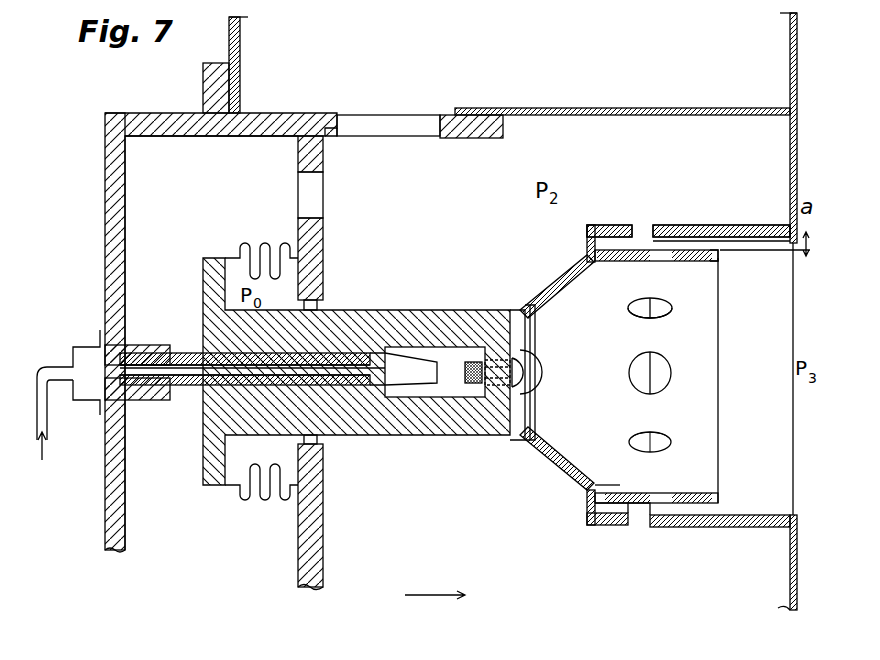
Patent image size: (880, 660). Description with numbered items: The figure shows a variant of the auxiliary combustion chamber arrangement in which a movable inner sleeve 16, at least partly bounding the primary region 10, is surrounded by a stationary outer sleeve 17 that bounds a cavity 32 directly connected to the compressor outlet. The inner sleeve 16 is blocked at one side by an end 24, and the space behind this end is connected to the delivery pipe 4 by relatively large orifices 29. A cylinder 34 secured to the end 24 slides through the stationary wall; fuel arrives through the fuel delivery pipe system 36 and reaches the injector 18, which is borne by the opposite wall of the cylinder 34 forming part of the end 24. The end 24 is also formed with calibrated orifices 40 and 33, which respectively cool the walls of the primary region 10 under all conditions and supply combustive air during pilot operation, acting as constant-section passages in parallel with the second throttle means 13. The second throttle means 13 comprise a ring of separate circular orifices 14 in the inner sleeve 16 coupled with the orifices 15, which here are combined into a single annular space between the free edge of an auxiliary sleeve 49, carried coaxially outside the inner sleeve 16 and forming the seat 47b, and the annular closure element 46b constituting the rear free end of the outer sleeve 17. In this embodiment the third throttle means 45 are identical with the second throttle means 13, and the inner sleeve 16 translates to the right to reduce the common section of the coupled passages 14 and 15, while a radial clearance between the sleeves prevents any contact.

The delivery pipe 4 is at (486, 84).
The orifices 29 is at (388, 125).
The cavity 32 is at (456, 208).
The cylinder 34 is at (405, 315).
The fuel delivery pipe system 36 is at (47, 372).
The injector 18 is at (535, 366).
The calibrated orifice 33 is at (517, 310).
The calibrated orifices 40 is at (563, 273).
The orifice 15 is at (638, 224).
The seat 47b is at (633, 226).
The annular closure element 46b is at (652, 224).
The outer cylindrical sleeve 17 is at (746, 225).
The orifice 14 is at (655, 262).
The inner cylindrical sleeve 16 is at (712, 265).
The primary region 10 is at (605, 429).
The end 24 is at (572, 485).
The auxiliary sleeve 49 is at (597, 528).
The second throttle means 13 is at (641, 528).
The third throttle means 45 is at (637, 520).